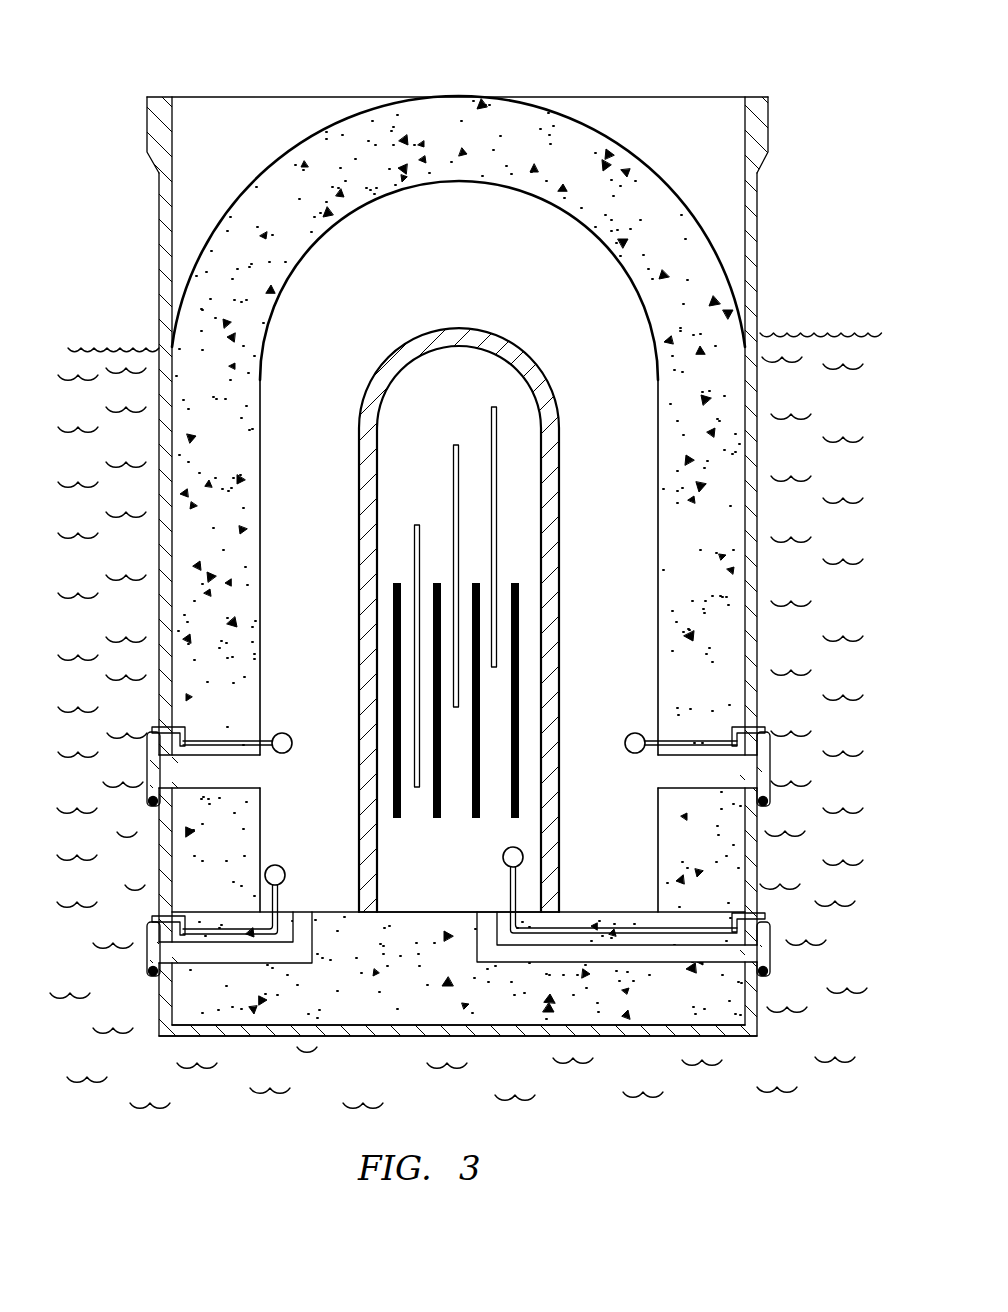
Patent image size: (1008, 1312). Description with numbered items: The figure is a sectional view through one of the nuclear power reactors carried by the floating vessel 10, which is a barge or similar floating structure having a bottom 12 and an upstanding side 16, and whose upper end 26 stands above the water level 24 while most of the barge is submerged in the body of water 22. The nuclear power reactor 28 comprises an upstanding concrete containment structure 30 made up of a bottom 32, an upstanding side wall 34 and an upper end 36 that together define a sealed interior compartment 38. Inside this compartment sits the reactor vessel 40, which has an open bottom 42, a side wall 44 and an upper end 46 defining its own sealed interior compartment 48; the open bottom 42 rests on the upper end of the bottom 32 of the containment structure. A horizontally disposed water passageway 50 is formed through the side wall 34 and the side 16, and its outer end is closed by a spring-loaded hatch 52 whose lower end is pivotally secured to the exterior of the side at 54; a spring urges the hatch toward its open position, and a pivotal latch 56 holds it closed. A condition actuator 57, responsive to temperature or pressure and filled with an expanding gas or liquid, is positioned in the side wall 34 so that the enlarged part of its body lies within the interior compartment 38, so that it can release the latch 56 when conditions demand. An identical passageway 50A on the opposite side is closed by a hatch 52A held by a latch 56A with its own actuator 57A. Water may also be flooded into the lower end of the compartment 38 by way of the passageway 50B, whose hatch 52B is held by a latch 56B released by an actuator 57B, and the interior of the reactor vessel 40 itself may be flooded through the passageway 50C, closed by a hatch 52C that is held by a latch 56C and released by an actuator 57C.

The floating vessel 10 is at (796, 152).
The bottom 12 is at (345, 1040).
The upstanding side 16 is at (758, 265).
The body of water 22 is at (873, 736).
The water level 24 is at (818, 333).
The upper end 26 is at (258, 97).
The nuclear power reactor 28 is at (528, 74).
The containment structure 30 is at (645, 154).
The bottom 32 is at (461, 984).
The side wall 34 is at (692, 488).
The upper end 36 is at (408, 122).
The interior compartment 38 is at (506, 262).
The reactor vessel 40 is at (540, 384).
The open bottom 42 is at (548, 907).
The side wall 44 is at (560, 630).
The upper end 46 is at (450, 326).
The interior compartment 48 is at (446, 413).
The water passageway 50 is at (662, 775).
The passageway 50A is at (359, 775).
The passageway 50B is at (302, 921).
The passageway 50C is at (623, 962).
The spring-loaded hatch 52 is at (768, 768).
The hatch 52A is at (150, 765).
The hatch 52B is at (150, 955).
The hatch 52C is at (768, 955).
The pivot 54 is at (770, 802).
The pivotal latch 56 is at (762, 728).
The latch 56A is at (150, 729).
The latch 56B is at (150, 918).
The latch 56C is at (762, 918).
The condition actuator 57 is at (634, 732).
The actuator 57A is at (265, 728).
The actuator 57B is at (280, 862).
The actuator 57C is at (505, 862).